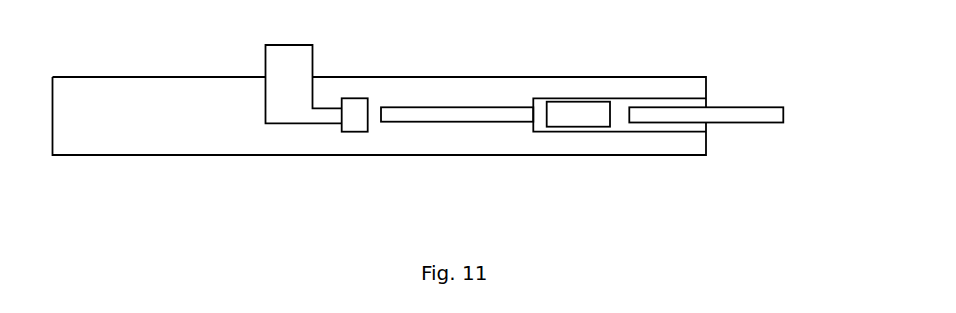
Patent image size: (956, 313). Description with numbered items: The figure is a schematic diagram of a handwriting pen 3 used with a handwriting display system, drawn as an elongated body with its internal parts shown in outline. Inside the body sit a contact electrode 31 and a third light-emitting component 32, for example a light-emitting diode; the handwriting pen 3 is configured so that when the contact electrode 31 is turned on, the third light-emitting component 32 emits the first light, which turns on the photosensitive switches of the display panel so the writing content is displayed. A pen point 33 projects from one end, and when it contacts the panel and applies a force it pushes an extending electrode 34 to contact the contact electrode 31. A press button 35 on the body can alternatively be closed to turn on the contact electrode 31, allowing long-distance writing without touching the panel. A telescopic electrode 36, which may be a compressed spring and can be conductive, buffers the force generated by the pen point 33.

The handwriting pen 3 is at (457, 206).
The contact electrode 31 is at (353, 108).
The third light-emitting component 32 is at (563, 112).
The pen point 33 is at (767, 112).
The extending electrode 34 is at (465, 113).
The press button 35 is at (283, 77).
The telescopic electrode 36 is at (617, 115).